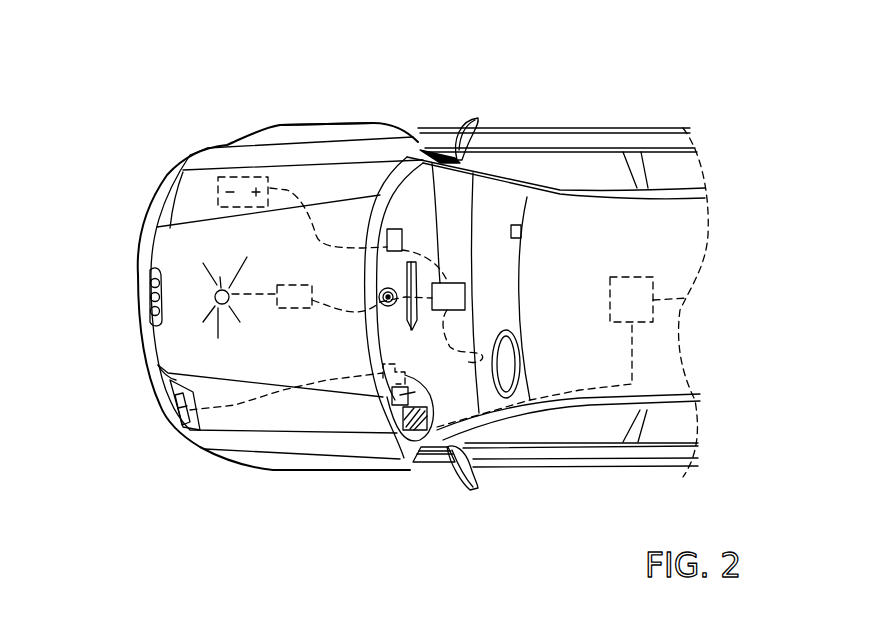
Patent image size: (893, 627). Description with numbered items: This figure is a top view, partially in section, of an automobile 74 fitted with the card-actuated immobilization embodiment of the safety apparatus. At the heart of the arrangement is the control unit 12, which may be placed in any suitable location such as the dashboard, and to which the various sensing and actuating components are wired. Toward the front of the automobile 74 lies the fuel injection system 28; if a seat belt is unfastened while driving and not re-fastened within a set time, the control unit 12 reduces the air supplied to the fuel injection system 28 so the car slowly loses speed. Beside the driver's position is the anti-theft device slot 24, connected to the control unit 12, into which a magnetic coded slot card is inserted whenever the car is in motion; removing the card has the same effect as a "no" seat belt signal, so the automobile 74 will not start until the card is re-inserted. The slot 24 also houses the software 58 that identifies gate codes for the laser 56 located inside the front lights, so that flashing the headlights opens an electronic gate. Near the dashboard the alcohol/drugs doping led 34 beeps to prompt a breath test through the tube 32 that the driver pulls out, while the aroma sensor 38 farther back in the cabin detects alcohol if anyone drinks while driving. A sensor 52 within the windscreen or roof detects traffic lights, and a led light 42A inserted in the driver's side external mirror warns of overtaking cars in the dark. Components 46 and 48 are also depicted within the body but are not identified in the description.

The automobile 74 is at (290, 122).
The control unit 46 is at (393, 228).
The anti-theft device slot 24 is at (430, 138).
The sensor 52 is at (514, 225).
The control unit 12 is at (467, 294).
The aroma sensor 38 is at (648, 282).
The indicator lamp 48 is at (216, 298).
The fuel injection system 28 is at (293, 309).
The laser 56 is at (178, 409).
The software 58 is at (388, 380).
The alcohol/drugs doping led with beep sound 34 is at (400, 440).
The tube 32 is at (431, 450).
The led light 42A is at (463, 487).